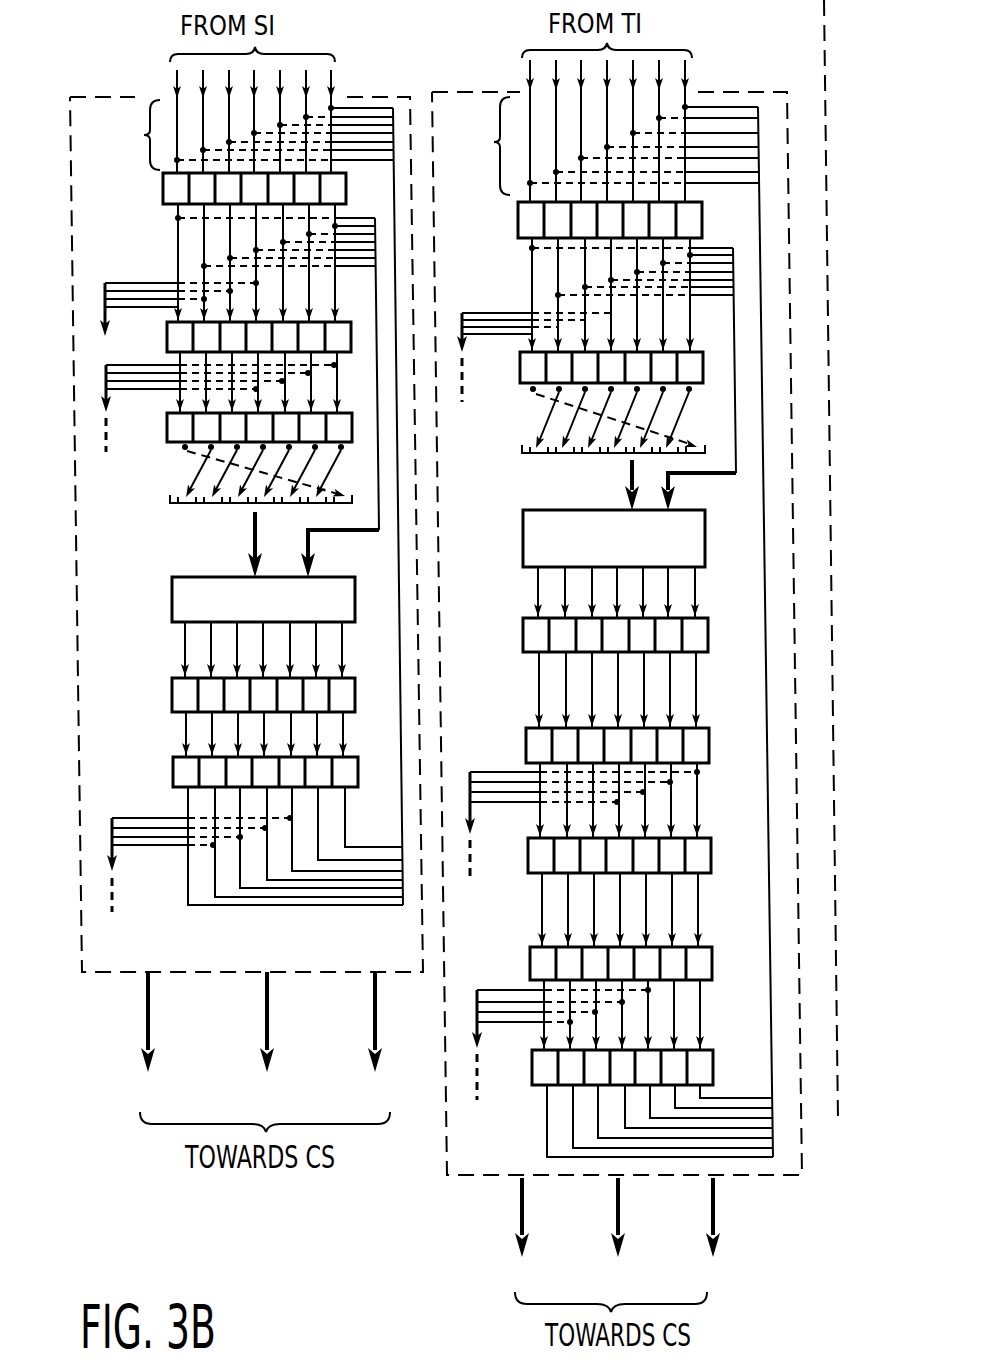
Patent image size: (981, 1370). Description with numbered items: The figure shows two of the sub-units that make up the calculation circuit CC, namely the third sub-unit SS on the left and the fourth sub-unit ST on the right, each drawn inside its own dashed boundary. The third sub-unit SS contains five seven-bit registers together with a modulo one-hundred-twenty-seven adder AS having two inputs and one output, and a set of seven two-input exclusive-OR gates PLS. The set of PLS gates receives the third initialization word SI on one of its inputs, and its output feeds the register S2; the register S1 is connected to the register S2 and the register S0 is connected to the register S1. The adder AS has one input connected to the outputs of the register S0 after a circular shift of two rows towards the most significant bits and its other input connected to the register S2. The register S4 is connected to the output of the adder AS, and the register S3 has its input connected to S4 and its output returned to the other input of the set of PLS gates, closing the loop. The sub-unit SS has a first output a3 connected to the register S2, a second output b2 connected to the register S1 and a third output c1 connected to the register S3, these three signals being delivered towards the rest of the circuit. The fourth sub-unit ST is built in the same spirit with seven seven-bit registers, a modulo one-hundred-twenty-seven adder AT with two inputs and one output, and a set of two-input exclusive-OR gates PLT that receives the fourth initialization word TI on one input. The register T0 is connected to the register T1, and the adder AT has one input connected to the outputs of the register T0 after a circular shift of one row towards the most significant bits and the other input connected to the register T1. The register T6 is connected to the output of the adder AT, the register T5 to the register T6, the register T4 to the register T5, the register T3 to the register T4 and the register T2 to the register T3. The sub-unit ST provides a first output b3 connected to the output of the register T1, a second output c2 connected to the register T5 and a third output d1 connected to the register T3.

The set of exclusive-OR logic gates PLS is at (235, 135).
The register S2 is at (158, 187).
The register S1 is at (160, 340).
The register S0 is at (162, 432).
The adder AS is at (166, 607).
The register S4 is at (166, 697).
The register S3 is at (167, 762).
The first output a3 is at (102, 308).
The second output b2 is at (100, 402).
The third output c1 is at (108, 856).
The third sub-unit SS is at (82, 946).
The set of exclusive-OR logic gates PLT is at (598, 146).
The register T1 is at (513, 217).
The register T0 is at (515, 373).
The adder AT is at (517, 552).
The register T6 is at (714, 631).
The register T5 is at (715, 745).
The register T4 is at (716, 856).
The register T3 is at (717, 951).
The register T2 is at (718, 1061).
The first output b3 is at (458, 344).
The second output c2 is at (468, 800).
The third output d1 is at (593, 1107).
The fourth sub-unit ST is at (447, 1160).
The calculation circuit CC is at (838, 1120).